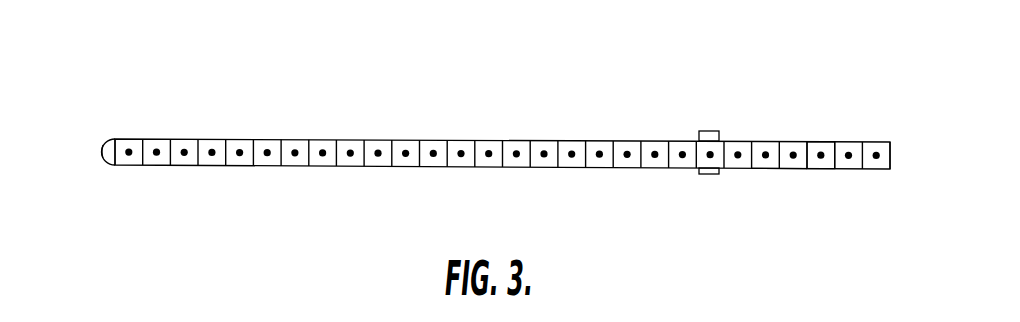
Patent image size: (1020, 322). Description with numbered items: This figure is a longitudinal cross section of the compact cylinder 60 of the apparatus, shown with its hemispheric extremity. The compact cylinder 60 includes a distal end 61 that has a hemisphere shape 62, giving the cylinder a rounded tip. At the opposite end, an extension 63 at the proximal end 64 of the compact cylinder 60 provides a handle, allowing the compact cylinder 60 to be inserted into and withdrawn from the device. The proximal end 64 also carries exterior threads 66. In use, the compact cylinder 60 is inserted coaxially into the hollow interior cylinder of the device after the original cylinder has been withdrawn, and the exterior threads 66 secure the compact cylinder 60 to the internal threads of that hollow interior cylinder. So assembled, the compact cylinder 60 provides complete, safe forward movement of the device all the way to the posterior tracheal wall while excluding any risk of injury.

The compact cylinder 60 is at (402, 127).
The distal end 61 is at (102, 152).
The hemisphere shape 62 is at (103, 148).
The extension 63 is at (818, 142).
The proximal end 64 is at (787, 172).
The exterior threads 66 is at (707, 130).